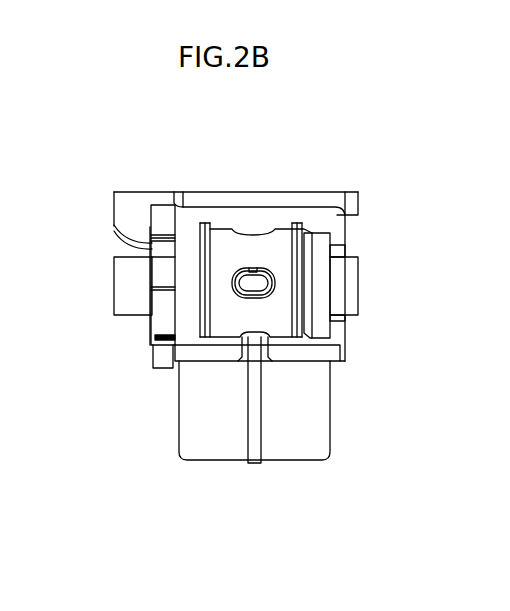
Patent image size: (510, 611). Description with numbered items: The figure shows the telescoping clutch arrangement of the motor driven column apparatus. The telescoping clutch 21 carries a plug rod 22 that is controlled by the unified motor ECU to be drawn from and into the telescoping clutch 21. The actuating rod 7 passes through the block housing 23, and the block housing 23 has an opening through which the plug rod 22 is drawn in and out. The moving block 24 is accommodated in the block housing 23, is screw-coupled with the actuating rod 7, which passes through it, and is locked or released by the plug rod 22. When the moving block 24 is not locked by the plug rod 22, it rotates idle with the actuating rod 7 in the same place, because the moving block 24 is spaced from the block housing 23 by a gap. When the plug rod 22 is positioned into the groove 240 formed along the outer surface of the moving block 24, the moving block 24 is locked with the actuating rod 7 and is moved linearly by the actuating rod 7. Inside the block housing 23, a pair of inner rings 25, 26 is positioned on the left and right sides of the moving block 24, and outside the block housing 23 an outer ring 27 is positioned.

The actuating rod 7 is at (348, 295).
The telescoping clutch 21 is at (198, 412).
The plug rod 22 is at (256, 454).
The block housing 23 is at (247, 210).
The moving block 24 is at (253, 268).
The inner ring 25 is at (316, 310).
The inner ring 26 is at (193, 293).
The outer ring 27 is at (163, 343).
The groove 240 is at (257, 340).